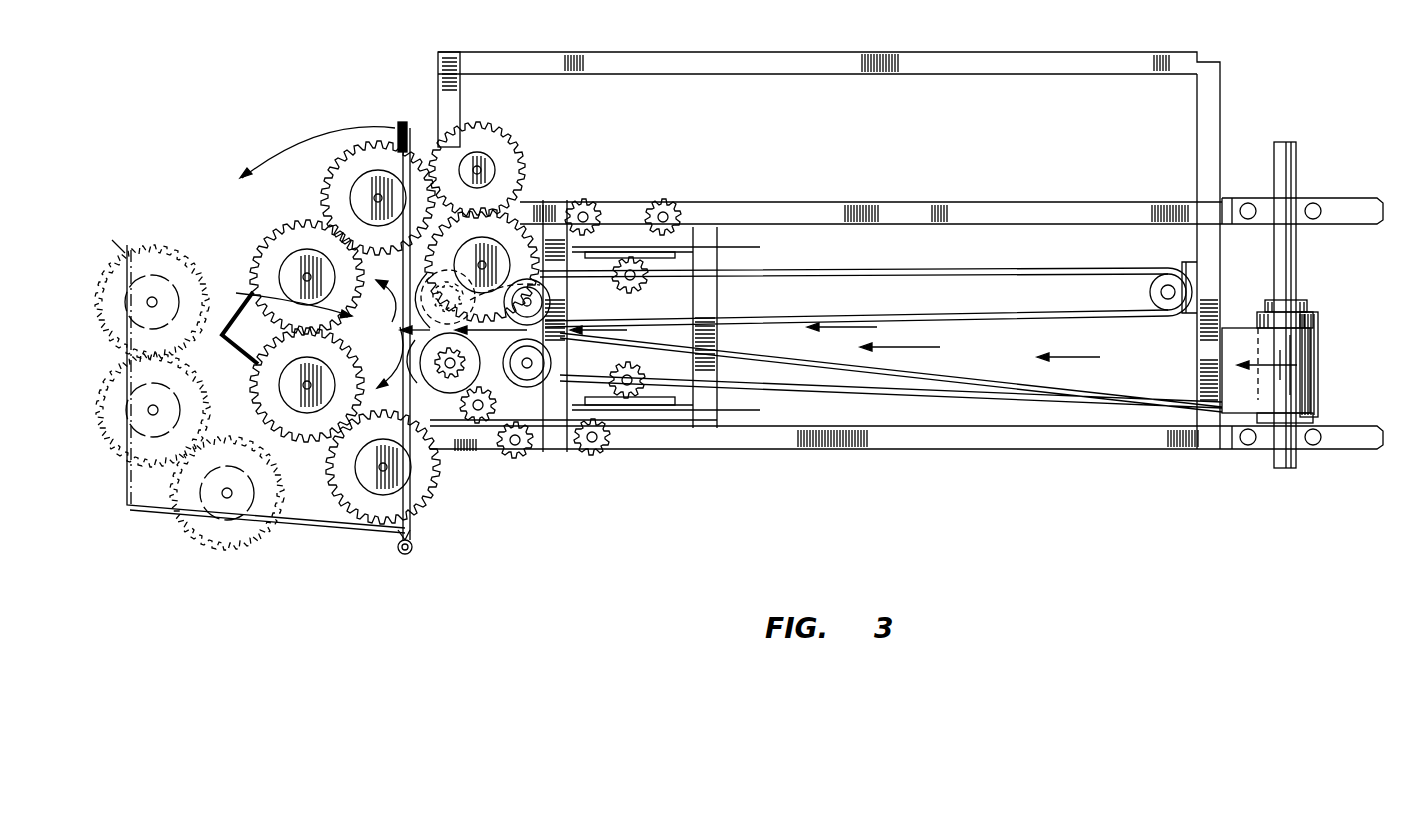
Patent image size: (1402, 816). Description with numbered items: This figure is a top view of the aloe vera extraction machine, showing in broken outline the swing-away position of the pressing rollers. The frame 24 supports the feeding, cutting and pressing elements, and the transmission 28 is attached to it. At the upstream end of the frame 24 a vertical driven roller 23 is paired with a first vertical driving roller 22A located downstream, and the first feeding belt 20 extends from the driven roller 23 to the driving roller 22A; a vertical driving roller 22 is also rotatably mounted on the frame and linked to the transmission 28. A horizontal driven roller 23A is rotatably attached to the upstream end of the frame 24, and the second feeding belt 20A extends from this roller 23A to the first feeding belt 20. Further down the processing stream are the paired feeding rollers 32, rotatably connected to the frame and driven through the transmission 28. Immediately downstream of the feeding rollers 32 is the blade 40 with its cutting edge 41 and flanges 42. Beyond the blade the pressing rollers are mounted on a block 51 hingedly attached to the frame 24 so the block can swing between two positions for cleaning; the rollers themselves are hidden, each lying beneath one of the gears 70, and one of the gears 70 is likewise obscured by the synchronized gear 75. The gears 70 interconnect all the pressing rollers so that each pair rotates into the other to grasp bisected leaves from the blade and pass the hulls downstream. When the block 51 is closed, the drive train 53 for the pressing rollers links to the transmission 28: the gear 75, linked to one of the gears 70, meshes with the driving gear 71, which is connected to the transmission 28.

The first feeding belt 20 is at (920, 282).
The second feeding belt 20A is at (1166, 386).
The vertical driving roller 22 is at (555, 375).
The first vertical driving roller 22A is at (580, 302).
The vertical driven roller 23 is at (1150, 272).
The horizontal driven roller 23A is at (1312, 318).
The frame 24 is at (910, 203).
The transmission 28 is at (507, 230).
The feeding rollers 32 is at (530, 303).
The blade 40 is at (277, 322).
The cutting edge 41 is at (456, 378).
The flanges 42 is at (388, 334).
The block 51 is at (244, 368).
The drive train 53 is at (318, 125).
The gears 70 is at (277, 232).
The driving gear 71 is at (500, 140).
The synchronized gear 75 is at (360, 162).